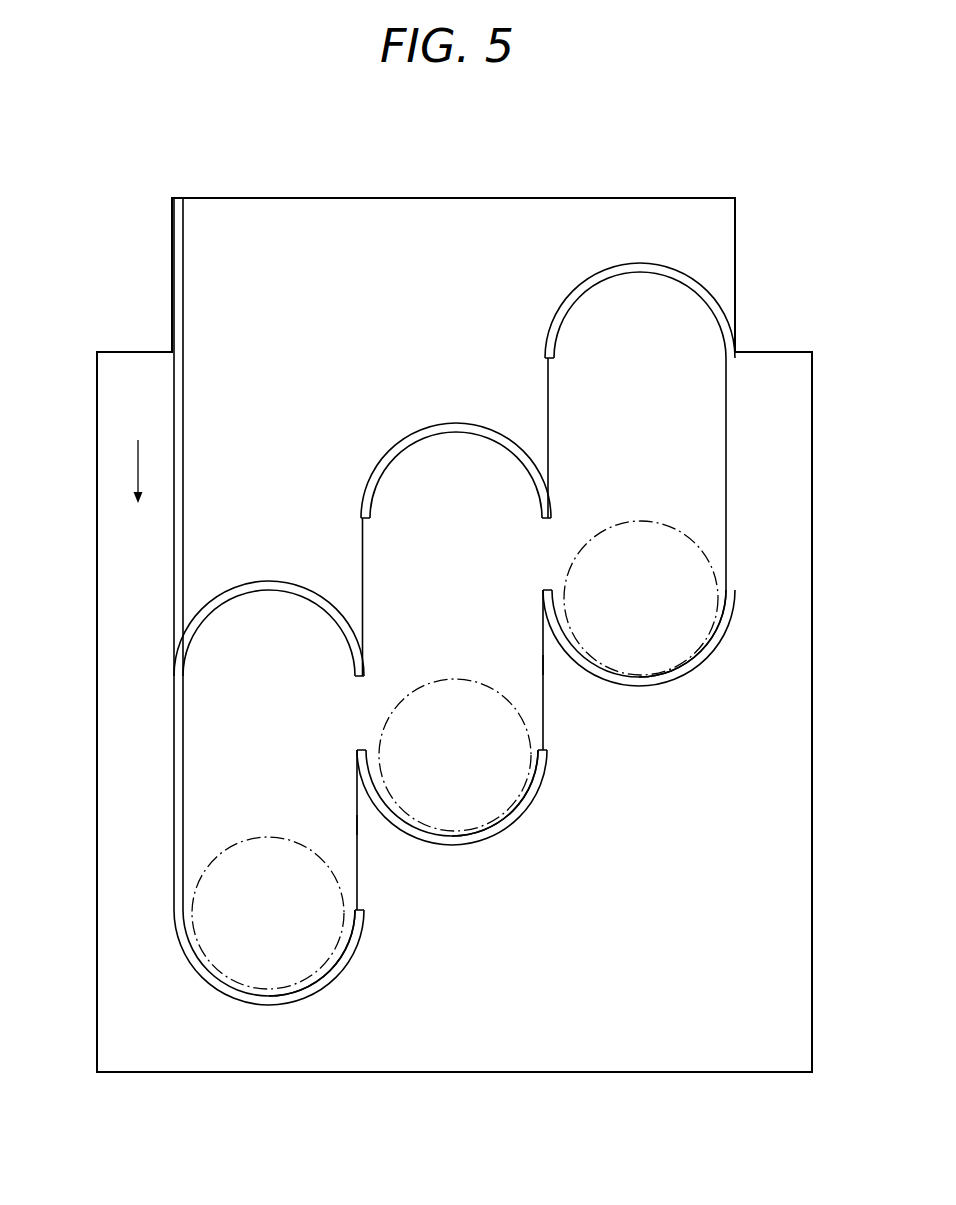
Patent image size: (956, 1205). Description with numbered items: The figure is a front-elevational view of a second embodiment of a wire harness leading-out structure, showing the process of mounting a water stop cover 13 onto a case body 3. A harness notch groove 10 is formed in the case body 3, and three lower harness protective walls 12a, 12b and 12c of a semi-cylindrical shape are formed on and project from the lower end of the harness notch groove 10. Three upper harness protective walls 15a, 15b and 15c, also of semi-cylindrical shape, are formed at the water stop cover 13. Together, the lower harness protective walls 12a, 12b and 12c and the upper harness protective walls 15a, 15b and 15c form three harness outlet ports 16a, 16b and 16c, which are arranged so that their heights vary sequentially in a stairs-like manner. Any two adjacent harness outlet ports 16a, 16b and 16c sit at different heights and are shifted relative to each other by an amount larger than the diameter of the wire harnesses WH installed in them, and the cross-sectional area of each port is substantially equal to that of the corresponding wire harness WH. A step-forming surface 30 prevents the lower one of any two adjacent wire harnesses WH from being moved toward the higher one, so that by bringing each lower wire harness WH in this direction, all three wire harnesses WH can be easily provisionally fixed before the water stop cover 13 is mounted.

The case body 3 is at (783, 994).
The harness notch groove 10 is at (192, 725).
The water stop cover 13 is at (432, 210).
The upper harness protective wall 15a is at (270, 582).
The upper harness protective wall 15b is at (457, 424).
The upper harness protective wall 15c is at (643, 262).
The lower harness protective wall 12a is at (233, 1002).
The lower harness protective wall 12b is at (421, 836).
The lower harness protective wall 12c is at (604, 684).
The harness outlet port 16a is at (342, 950).
The harness outlet port 16b is at (524, 792).
The harness outlet port 16c is at (705, 632).
The step-forming surface 30 is at (356, 823).
The wire harness WH is at (271, 837).